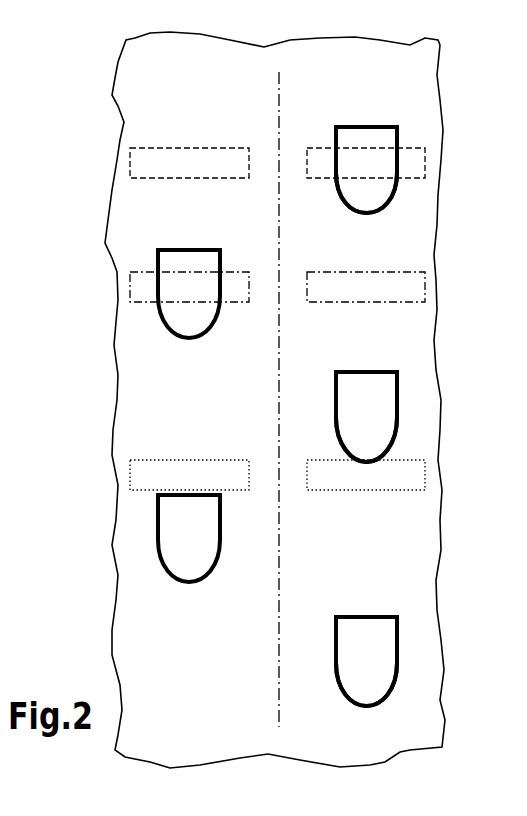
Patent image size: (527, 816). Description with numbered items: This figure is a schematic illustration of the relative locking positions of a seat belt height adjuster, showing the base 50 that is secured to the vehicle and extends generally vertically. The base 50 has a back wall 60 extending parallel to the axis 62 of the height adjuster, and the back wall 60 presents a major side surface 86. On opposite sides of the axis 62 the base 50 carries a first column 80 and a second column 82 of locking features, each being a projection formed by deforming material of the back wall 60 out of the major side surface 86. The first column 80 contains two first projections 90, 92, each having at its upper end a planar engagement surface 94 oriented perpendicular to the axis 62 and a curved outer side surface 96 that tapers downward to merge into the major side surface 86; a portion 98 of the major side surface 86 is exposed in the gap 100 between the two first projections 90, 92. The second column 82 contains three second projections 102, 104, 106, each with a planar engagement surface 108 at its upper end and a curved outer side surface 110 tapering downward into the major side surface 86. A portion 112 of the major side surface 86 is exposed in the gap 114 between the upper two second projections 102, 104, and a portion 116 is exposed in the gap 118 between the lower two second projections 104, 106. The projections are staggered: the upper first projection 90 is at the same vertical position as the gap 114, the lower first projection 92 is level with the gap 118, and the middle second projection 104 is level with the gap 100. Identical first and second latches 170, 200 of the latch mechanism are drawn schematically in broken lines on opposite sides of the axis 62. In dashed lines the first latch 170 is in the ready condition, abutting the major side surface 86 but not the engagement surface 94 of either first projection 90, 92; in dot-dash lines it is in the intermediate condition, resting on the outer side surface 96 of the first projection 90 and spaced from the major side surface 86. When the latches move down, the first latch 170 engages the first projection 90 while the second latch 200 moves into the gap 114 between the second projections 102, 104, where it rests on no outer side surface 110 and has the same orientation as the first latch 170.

The base 50 is at (112, 70).
The back wall 60 is at (442, 76).
The axis 62 is at (278, 658).
The first column 80 is at (188, 118).
The second column 82 is at (367, 108).
The major side surface 86 is at (133, 100).
The upper first projection 90 is at (150, 326).
The lower first projection 92 is at (150, 565).
The planar engagement surface 94 is at (188, 249).
The curved outer side surface 96 is at (205, 263).
The exposed portion of major side surface 98 is at (175, 358).
The gap 100 is at (180, 415).
The upper second projection 102 is at (412, 138).
The middle second projection 104 is at (412, 389).
The lower second projection 106 is at (412, 654).
The planar engagement surface 108 is at (386, 127).
The curved outer side surface 110 is at (362, 192).
The exposed portion of major side surface 112 is at (390, 233).
The gap 114 is at (387, 317).
The exposed portion of major side surface 116 is at (388, 500).
The gap 118 is at (372, 556).
The first latch 170 is at (120, 159).
The second latch 200 is at (438, 165).